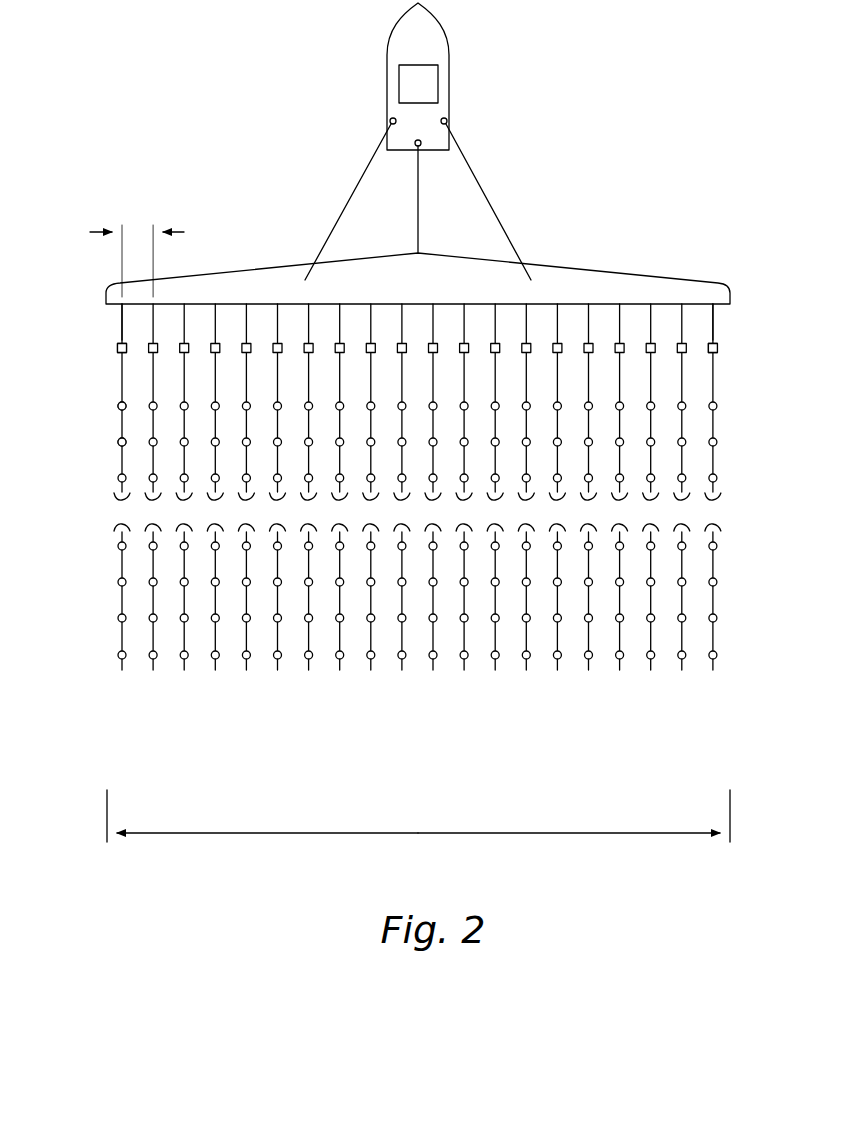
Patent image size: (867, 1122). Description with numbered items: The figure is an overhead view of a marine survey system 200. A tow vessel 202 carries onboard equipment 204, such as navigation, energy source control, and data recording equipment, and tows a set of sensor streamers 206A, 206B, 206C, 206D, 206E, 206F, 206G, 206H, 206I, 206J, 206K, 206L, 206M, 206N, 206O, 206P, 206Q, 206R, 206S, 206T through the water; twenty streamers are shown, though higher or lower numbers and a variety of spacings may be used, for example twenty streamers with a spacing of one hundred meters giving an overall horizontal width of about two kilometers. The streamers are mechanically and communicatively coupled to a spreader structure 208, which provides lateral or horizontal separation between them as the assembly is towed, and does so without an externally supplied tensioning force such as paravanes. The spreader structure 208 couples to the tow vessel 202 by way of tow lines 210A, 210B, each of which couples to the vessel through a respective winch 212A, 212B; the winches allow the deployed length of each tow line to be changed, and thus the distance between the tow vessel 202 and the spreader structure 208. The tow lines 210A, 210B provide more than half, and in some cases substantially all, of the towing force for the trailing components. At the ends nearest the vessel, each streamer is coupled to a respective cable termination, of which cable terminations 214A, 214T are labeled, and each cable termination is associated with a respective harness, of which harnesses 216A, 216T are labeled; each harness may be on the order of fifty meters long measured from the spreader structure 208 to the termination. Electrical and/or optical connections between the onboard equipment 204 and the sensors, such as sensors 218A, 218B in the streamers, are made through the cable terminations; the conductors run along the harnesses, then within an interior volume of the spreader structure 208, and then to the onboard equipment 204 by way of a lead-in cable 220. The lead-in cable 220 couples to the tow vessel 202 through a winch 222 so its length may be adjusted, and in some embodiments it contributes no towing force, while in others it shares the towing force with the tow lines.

The marine survey system 200 is at (206, 100).
The tow vessel 202 is at (392, 27).
The onboard equipment 204 is at (441, 75).
The sensor streamer 206A is at (98, 517).
The sensor streamer 206B is at (153, 675).
The sensor streamer 206C is at (184, 675).
The sensor streamer 206D is at (215, 675).
The sensor streamer 206E is at (246, 675).
The sensor streamer 206F is at (278, 675).
The sensor streamer 206G is at (309, 675).
The sensor streamer 206H is at (340, 675).
The sensor streamer 206I is at (371, 675).
The sensor streamer 206J is at (402, 675).
The sensor streamer 206K is at (433, 675).
The sensor streamer 206L is at (464, 675).
The sensor streamer 206M is at (495, 675).
The sensor streamer 206N is at (526, 675).
The sensor streamer 206O is at (557, 675).
The sensor streamer 206P is at (588, 675).
The sensor streamer 206Q is at (620, 675).
The sensor streamer 206R is at (651, 675).
The sensor streamer 206S is at (682, 675).
The sensor streamer 206T is at (743, 534).
The spreader structure 208 is at (601, 270).
The tow line 210A is at (346, 191).
The tow line 210B is at (487, 192).
The winch 212A is at (389, 119).
The winch 212B is at (448, 118).
The cable termination 214A is at (118, 349).
The cable termination 214T is at (718, 349).
The harness 216A is at (120, 323).
The harness 216T is at (716, 322).
The sensor 218A is at (118, 406).
The sensor 218B is at (118, 442).
The lead-in cable 220 is at (423, 232).
The winch 222 is at (414, 148).